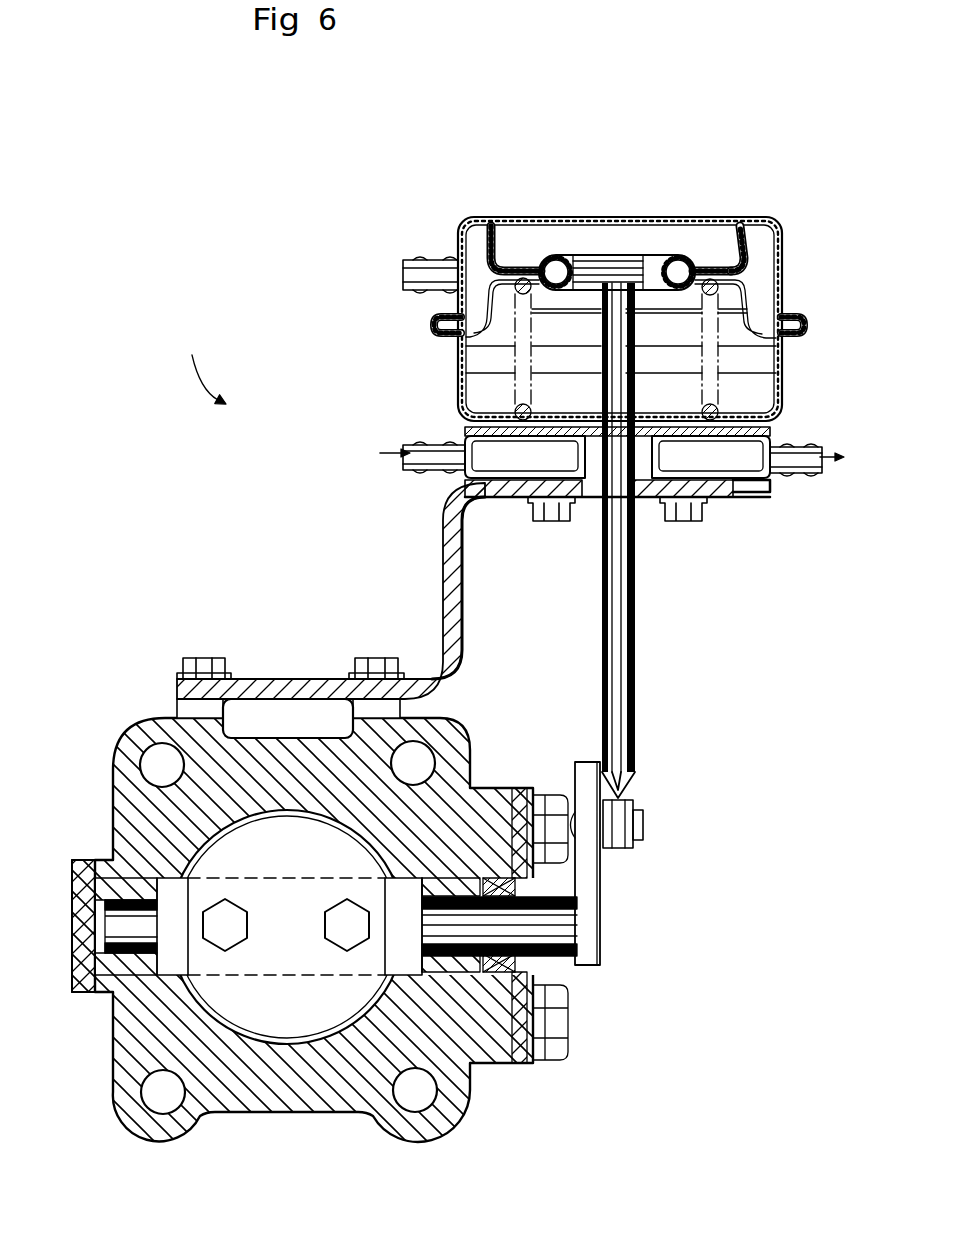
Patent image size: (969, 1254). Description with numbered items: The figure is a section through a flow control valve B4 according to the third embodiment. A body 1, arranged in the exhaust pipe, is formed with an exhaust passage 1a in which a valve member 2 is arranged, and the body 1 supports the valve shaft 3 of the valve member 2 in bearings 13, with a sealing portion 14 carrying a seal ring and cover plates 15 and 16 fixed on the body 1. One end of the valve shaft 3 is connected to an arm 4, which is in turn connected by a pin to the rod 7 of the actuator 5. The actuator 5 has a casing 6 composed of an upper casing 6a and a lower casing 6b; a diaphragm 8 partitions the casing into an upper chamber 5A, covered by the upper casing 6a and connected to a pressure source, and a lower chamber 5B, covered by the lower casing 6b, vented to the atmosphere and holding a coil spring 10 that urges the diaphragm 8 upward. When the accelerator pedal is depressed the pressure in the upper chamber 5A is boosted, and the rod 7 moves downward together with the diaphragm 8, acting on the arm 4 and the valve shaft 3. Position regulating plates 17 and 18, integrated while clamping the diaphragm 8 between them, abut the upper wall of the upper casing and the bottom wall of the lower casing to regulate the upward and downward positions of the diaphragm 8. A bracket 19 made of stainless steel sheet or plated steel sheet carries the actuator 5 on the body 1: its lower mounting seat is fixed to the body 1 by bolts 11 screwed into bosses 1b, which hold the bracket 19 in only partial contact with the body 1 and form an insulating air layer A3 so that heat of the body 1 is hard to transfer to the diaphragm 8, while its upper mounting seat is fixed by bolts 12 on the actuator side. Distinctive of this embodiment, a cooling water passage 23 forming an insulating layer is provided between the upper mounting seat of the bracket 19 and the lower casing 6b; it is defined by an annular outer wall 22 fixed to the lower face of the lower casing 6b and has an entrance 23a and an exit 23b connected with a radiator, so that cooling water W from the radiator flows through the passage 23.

The body 1 is at (122, 762).
The exhaust passage 1a is at (245, 1050).
The bosses 1b is at (187, 703).
The valve member 2 is at (300, 1008).
The valve shaft 3 is at (398, 962).
The arm 4 is at (595, 878).
The actuator 5 is at (795, 196).
The upper chamber 5A is at (480, 250).
The lower chamber 5B is at (458, 372).
The casing 6 is at (524, 229).
The upper casing 6a is at (617, 272).
The lower casing 6b is at (478, 400).
The rod 7 is at (635, 628).
The diaphragm 8 is at (752, 292).
The coil spring 10 is at (728, 415).
The bolts 11 is at (205, 660).
The bolts 12 is at (548, 522).
The bearings 13 is at (130, 968).
The sealing portion 14 is at (520, 968).
The cover plate 15 is at (82, 913).
The cover plate 16 is at (525, 1062).
The position regulating plate 17 is at (733, 248).
The position regulating plate 18 is at (668, 330).
The bracket 19 is at (455, 565).
The annular outer wall 22 is at (745, 492).
The cooling water passage 23 is at (752, 440).
The entrance 23a is at (420, 440).
The exit 23b is at (815, 480).
The insulating air layer A3 is at (280, 700).
The flow control valve B4 is at (193, 368).
The cooling water W is at (610, 455).